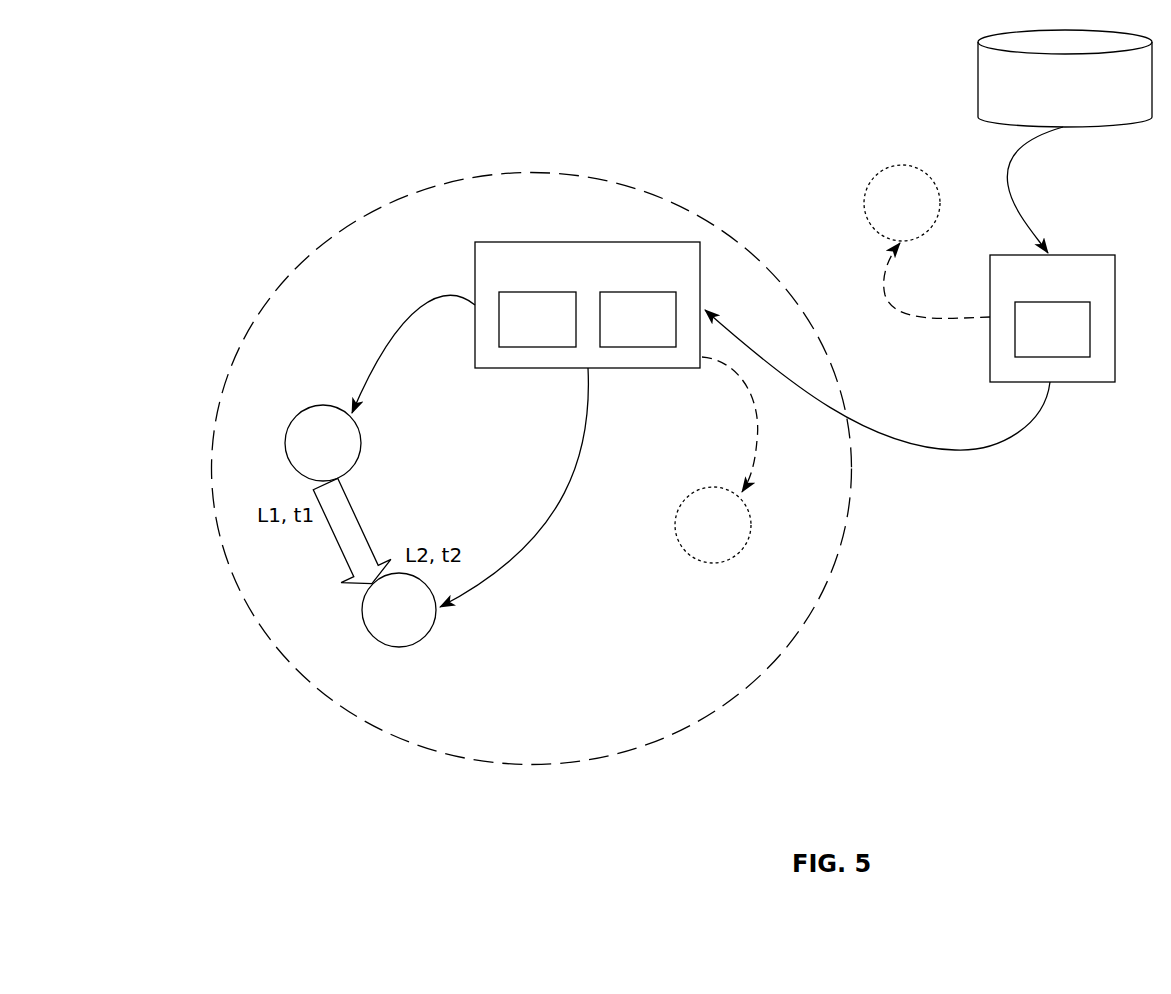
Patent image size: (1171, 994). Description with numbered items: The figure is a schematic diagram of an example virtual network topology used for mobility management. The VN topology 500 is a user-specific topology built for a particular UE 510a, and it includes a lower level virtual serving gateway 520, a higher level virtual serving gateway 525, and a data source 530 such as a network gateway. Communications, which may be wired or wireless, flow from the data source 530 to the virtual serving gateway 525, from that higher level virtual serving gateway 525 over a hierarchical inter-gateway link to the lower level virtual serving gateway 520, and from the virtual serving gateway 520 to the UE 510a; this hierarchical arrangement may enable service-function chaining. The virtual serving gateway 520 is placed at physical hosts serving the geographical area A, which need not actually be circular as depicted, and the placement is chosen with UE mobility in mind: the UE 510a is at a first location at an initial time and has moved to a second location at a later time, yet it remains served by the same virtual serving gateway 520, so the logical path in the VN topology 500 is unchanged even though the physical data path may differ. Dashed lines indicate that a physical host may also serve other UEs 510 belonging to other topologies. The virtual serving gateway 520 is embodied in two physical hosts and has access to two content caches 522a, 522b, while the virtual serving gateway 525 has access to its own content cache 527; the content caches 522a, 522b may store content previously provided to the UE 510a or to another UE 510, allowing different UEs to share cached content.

The VN topology 500 is at (347, 99).
The UE 510 is at (807, 364).
The UE 510a is at (360, 526).
The virtual serving gateway 520 is at (587, 305).
The content cache 522a is at (537, 319).
The content cache 522b is at (638, 319).
The virtual serving gateway 525 is at (1052, 318).
The content cache 527 is at (1052, 329).
The data source 530 is at (1065, 78).